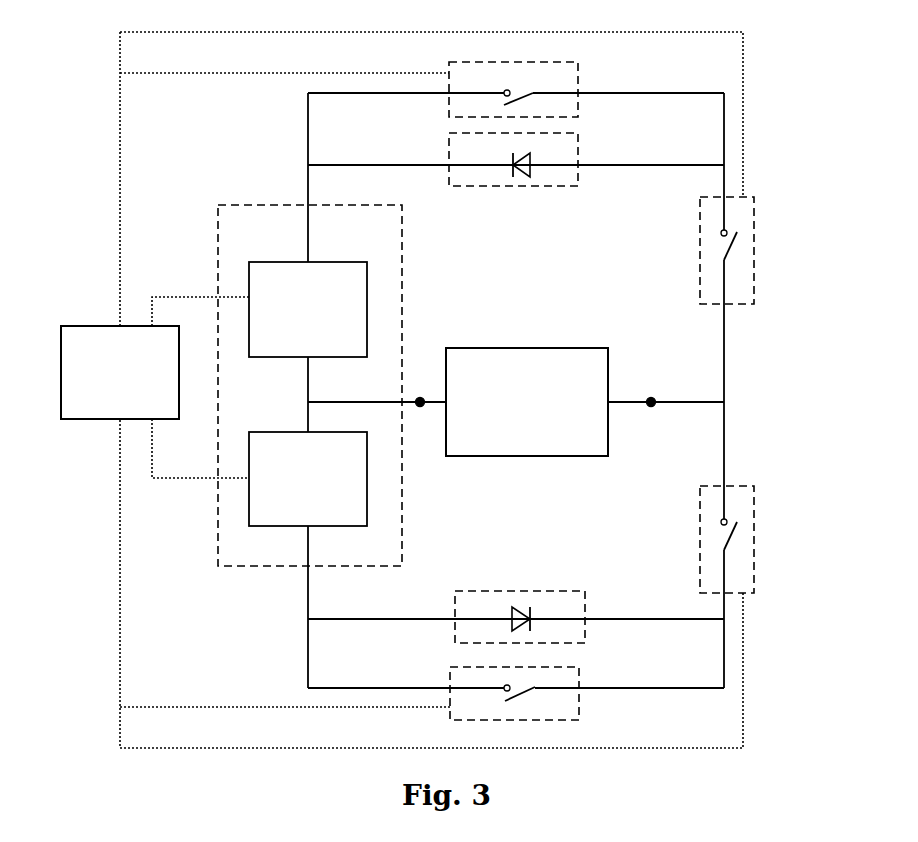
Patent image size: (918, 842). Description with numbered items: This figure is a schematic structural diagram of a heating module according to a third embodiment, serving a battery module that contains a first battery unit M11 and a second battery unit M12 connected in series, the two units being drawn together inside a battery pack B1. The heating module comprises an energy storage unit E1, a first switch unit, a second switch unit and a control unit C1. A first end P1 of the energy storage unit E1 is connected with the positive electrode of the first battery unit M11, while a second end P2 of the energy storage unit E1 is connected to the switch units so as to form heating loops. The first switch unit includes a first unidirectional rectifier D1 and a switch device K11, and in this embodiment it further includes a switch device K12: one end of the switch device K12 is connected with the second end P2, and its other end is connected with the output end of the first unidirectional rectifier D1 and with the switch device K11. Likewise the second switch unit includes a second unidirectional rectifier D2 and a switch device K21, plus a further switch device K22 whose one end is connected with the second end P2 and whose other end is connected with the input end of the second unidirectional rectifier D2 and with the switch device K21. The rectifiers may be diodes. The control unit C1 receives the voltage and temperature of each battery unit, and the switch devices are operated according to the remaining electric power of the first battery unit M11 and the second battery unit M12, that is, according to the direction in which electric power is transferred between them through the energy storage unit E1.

The control unit C1 is at (120, 372).
The battery pack B1 is at (310, 385).
The first battery unit M11 is at (308, 479).
The second battery unit M12 is at (308, 309).
The energy storage unit E1 is at (527, 402).
The first end of the energy storage unit P1 is at (424, 424).
The second end of the energy storage unit P2 is at (648, 424).
The switch device K11 is at (516, 695).
The switch device K12 is at (753, 539).
The switch device K21 is at (516, 89).
The switch device K22 is at (753, 250).
The first unidirectional rectifier D1 is at (516, 621).
The second unidirectional rectifier D2 is at (516, 159).